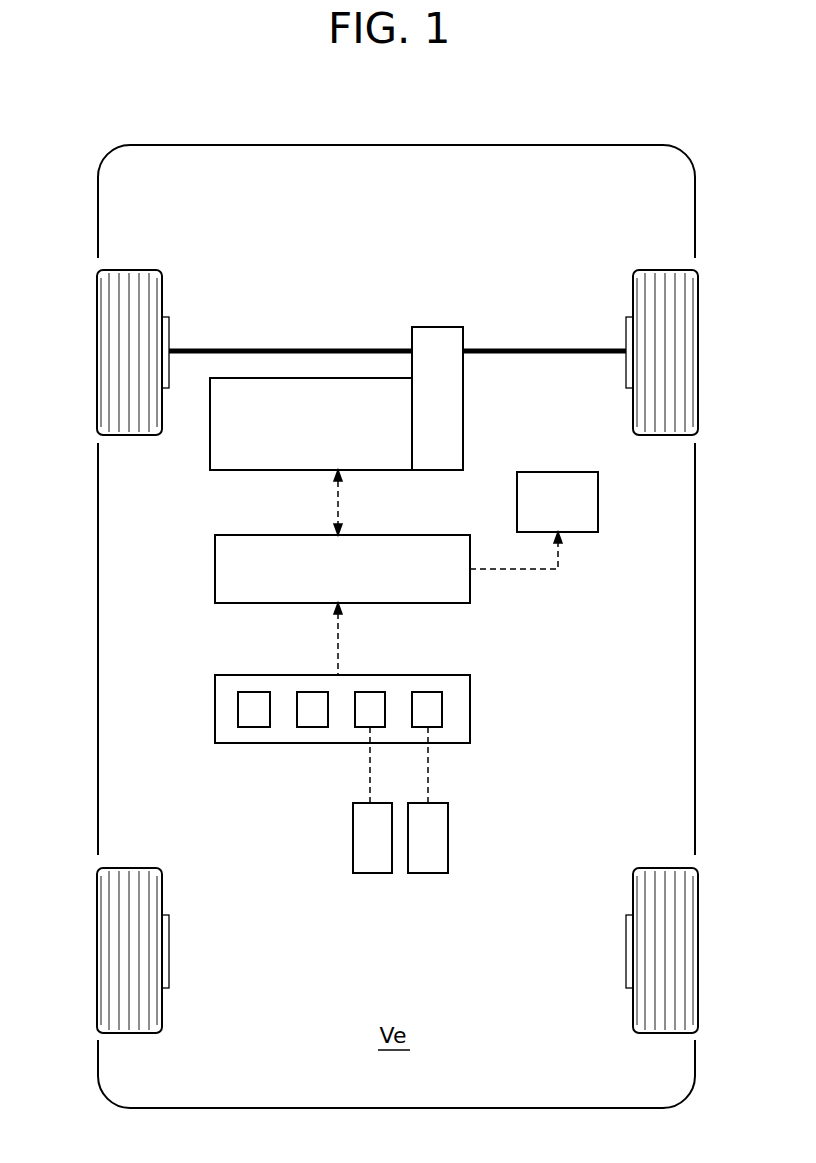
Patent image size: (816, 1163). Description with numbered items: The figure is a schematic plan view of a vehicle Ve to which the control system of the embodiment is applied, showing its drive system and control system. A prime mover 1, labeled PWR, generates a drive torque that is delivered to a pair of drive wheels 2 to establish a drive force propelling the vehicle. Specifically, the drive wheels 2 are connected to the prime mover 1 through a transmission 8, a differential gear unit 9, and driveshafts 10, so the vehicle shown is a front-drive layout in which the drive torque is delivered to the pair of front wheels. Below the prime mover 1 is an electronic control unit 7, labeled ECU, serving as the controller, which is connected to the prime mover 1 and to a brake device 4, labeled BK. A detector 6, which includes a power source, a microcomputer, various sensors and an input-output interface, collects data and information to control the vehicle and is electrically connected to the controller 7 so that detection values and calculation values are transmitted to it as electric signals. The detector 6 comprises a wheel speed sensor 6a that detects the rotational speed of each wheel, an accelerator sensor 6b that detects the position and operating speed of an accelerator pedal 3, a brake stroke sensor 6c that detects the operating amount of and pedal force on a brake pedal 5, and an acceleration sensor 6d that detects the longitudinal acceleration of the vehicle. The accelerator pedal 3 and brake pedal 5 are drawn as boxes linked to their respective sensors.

The prime mover 1 is at (279, 472).
The drive wheels 2 is at (125, 355).
The accelerator pedal 3 is at (427, 874).
The brake device 4 is at (558, 471).
The brake pedal 5 is at (371, 874).
The detector 6 is at (311, 714).
The wheel speed sensor 6a is at (253, 728).
The accelerator sensor 6b is at (428, 691).
The brake stroke sensor 6c is at (374, 691).
The acceleration sensor 6d is at (311, 728).
The electronic control unit 7 is at (215, 570).
The transmission 8 is at (448, 436).
The differential gear unit 9 is at (438, 345).
The driveshafts 10 is at (298, 348).